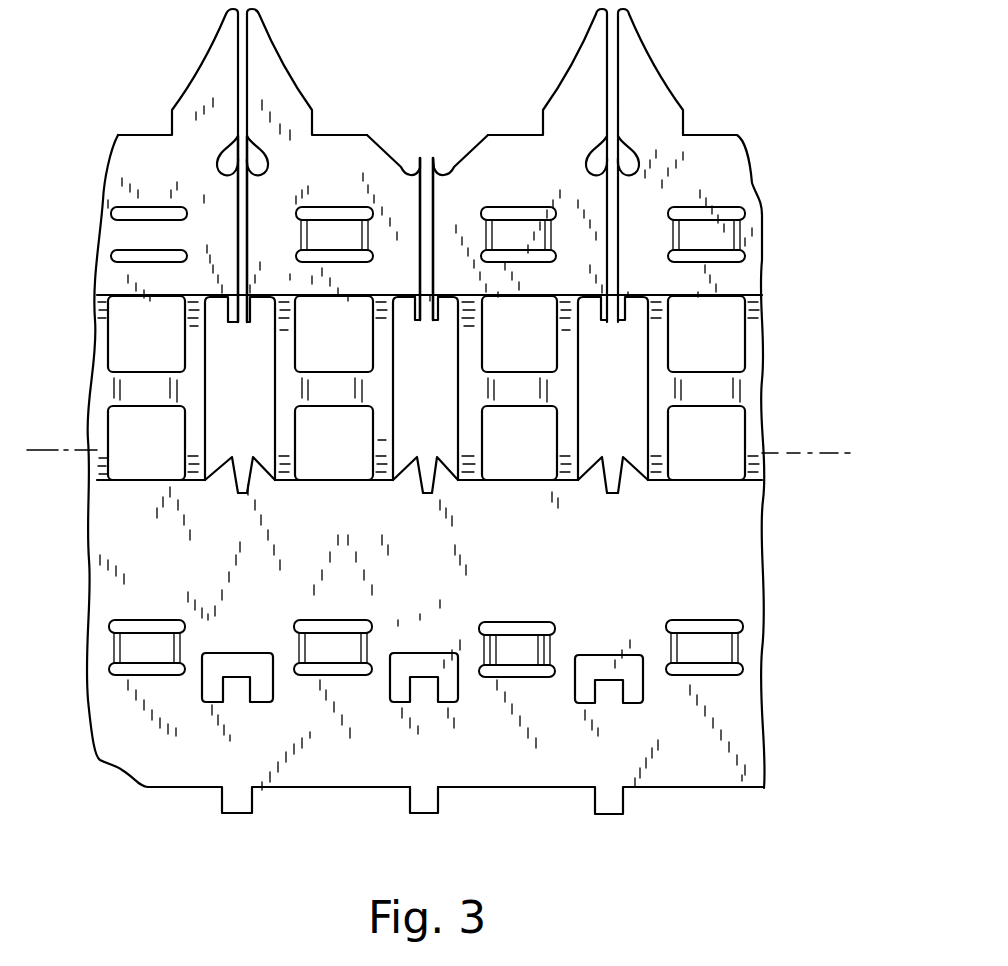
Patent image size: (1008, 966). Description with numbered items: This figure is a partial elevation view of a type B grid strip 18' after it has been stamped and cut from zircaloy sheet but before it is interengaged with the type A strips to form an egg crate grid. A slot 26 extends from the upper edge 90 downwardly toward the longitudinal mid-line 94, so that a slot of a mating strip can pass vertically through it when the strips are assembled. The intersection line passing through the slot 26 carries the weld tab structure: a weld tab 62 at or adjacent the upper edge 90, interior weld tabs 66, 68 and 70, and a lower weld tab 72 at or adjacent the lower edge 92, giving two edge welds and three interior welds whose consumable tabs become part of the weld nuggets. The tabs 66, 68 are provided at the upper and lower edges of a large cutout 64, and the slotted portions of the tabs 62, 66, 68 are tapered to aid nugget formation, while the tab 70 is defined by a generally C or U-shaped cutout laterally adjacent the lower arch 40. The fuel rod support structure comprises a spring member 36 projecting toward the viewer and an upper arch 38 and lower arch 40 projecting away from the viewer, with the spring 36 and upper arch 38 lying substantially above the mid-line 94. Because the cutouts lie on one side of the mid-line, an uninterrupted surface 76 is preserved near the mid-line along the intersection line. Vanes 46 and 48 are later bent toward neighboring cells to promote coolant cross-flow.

The grid strip 18' is at (445, 433).
The slot 26 is at (445, 158).
The spring member 36 is at (523, 414).
The upper arch 38 is at (506, 207).
The lower arch 40 is at (540, 648).
The vane 46 is at (584, 70).
The vane 48 is at (644, 78).
The weld tab 62 is at (418, 152).
The cutout 64 is at (446, 417).
The interior weld tab 66 is at (413, 321).
The interior weld tab 68 is at (411, 472).
The interior weld tab 70 is at (408, 682).
The lower weld tab 72 is at (438, 810).
The uninterrupted surface 76 is at (435, 603).
The upper edge 90 is at (334, 134).
The lower edge 92 is at (290, 790).
The longitudinal mid-line 94 is at (778, 452).